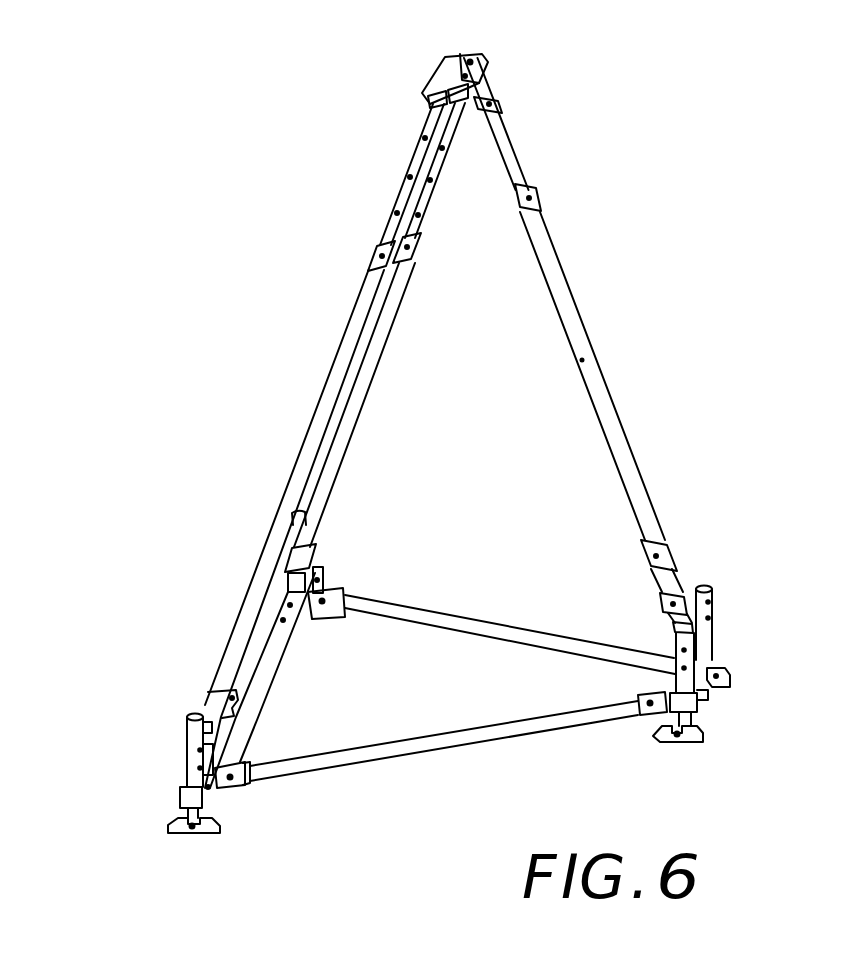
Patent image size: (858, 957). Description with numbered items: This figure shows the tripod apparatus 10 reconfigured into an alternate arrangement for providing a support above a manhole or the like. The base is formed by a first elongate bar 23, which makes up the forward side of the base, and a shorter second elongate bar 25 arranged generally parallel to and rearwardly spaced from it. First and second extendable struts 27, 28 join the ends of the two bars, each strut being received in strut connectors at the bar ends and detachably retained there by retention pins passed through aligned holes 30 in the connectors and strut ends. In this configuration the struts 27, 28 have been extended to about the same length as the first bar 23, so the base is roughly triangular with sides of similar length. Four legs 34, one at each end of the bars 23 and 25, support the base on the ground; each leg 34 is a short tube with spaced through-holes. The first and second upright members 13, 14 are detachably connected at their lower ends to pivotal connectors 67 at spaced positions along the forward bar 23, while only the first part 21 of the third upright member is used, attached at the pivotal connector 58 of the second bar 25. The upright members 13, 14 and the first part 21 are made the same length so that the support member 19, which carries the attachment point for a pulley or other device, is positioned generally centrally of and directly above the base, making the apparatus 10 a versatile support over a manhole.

The tripod apparatus 10 is at (232, 249).
The support member 19 is at (428, 74).
The first upright member 13 is at (343, 362).
The second upright member 14 is at (368, 372).
The first part of the third upright member 21 is at (597, 366).
The leg 34 is at (300, 520).
The pivotal connector 67 is at (320, 566).
The second extendable strut 28 is at (490, 622).
The first elongate bar 23 is at (266, 684).
The first extendable strut 27 is at (441, 742).
The hole 30 is at (652, 713).
The pivotal connector of the second bar 58 is at (714, 676).
The second elongate bar 25 is at (705, 714).